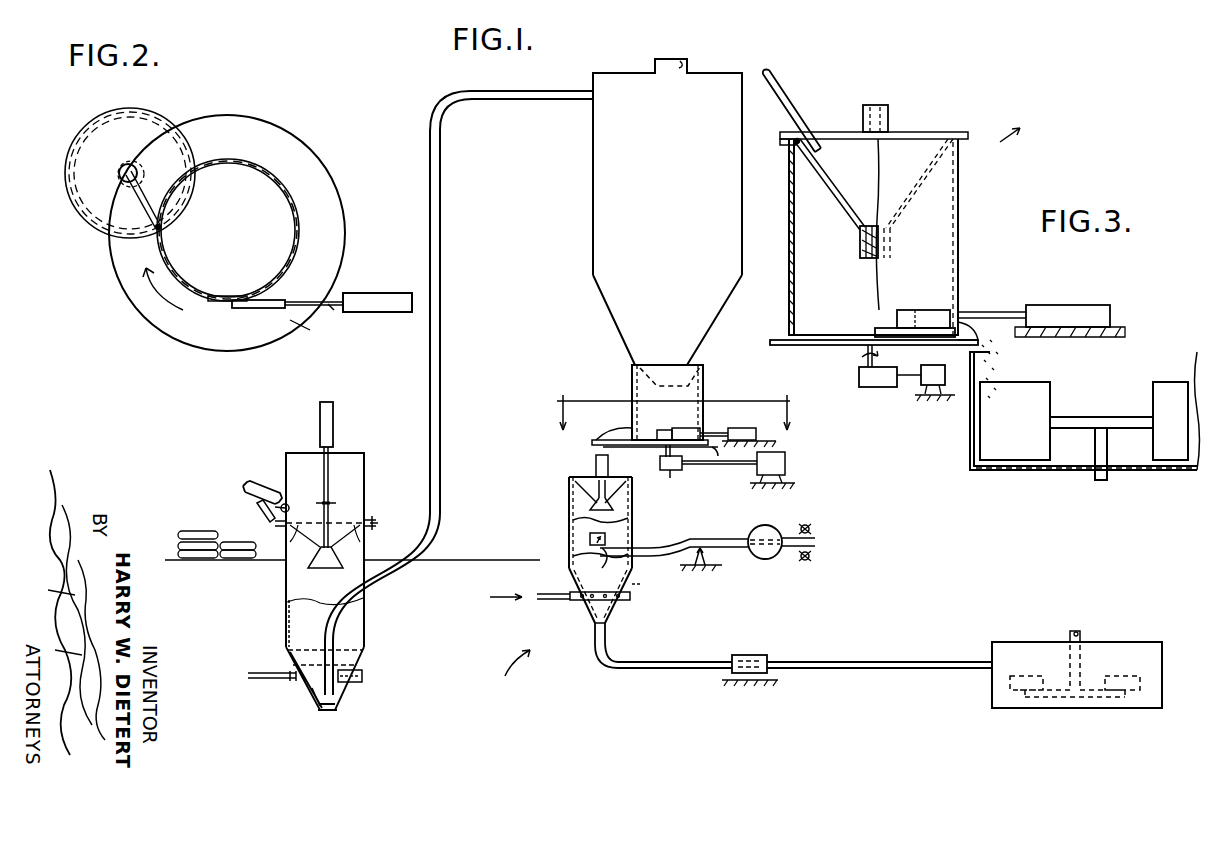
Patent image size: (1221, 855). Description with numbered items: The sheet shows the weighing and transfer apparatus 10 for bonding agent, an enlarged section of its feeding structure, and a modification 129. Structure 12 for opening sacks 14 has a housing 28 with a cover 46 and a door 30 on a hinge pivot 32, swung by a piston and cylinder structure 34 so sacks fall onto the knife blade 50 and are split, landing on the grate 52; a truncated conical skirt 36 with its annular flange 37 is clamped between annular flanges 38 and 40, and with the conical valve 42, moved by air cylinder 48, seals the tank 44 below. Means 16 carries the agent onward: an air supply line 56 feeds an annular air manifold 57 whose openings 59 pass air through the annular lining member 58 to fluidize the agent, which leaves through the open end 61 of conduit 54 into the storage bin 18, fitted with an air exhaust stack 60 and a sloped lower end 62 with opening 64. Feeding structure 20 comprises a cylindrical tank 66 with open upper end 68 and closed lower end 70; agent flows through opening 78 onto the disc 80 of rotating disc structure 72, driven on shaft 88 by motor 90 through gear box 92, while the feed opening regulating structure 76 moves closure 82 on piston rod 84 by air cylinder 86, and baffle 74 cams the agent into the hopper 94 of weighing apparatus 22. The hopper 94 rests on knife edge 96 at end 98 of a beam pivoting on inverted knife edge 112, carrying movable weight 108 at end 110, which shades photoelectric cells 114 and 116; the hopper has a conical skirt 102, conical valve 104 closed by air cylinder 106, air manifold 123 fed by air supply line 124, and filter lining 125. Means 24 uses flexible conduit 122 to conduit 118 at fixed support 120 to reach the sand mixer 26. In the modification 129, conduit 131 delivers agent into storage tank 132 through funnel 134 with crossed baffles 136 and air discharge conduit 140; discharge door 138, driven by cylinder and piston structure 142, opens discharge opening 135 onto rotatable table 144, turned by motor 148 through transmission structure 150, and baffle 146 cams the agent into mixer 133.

In FIG. 1, the weighing and transfer apparatus 10 is at (501, 673).
In FIG. 1, the structure for opening sacks 12 is at (372, 461).
In FIG. 1, the sacks 14 is at (193, 566).
In FIG. 1, the means for transferring bonding agent 16 is at (378, 629).
In FIG. 1, the storage bin 18 is at (742, 190).
In FIG. 2, the structure for feeding bonding agent 20 is at (138, 312).
In FIG. 1, the structure for feeding bonding agent 20 is at (630, 395).
In FIG. 1, the weighing apparatus 22 is at (578, 618).
In FIG. 1, the means for transferring bonding agent 24 is at (670, 668).
In FIG. 1, the sand mixer 26 is at (985, 692).
In FIG. 1, the housing 28 is at (366, 492).
In FIG. 1, the door 30 is at (240, 489).
In FIG. 1, the hinge pivot 32 is at (287, 504).
In FIG. 1, the piston and cylinder structure 34 is at (258, 508).
In FIG. 1, the truncated conical skirt 36 is at (352, 540).
In FIG. 1, the annular flange 37 is at (375, 524).
In FIG. 1, the annular flange 38 is at (366, 516).
In FIG. 1, the annular flange 40 is at (282, 524).
In FIG. 1, the conical valve 42 is at (326, 569).
In FIG. 1, the tank 44 is at (287, 610).
In FIG. 1, the cover 46 is at (296, 455).
In FIG. 1, the air cylinder 48 is at (334, 422).
In FIG. 1, the knife blade 50 is at (338, 500).
In FIG. 1, the grate 52 is at (304, 540).
In FIG. 1, the conduit 54 is at (441, 338).
In FIG. 1, the air supply line 56 is at (262, 670).
In FIG. 1, the annular air manifold 57 is at (362, 672).
In FIG. 1, the annular lining member 58 is at (290, 660).
In FIG. 1, the openings 59 is at (313, 683).
In FIG. 1, the air exhaust stack 60 is at (680, 60).
In FIG. 1, the open end 61 is at (322, 710).
In FIG. 1, the lower end 62 is at (603, 302).
In FIG. 1, the opening 64 is at (703, 395).
In FIG. 2, the cylindrical tank 66 is at (290, 180).
In FIG. 1, the cylindrical tank 66 is at (703, 375).
In FIG. 1, the open upper end 68 is at (630, 362).
In FIG. 1, the closed lower end 70 is at (655, 455).
In FIG. 1, the rotating disc structure 72 is at (700, 466).
In FIG. 2, the baffle 74 is at (128, 190).
In FIG. 1, the baffle 74 is at (615, 432).
In FIG. 2, the feed opening regulating structure 76 is at (334, 310).
In FIG. 1, the feed opening regulating structure 76 is at (718, 452).
In FIG. 2, the opening 78 is at (212, 301).
In FIG. 1, the opening 78 is at (665, 431).
In FIG. 2, the disc 80 is at (309, 333).
In FIG. 1, the disc 80 is at (596, 441).
In FIG. 2, the closure 82 is at (254, 308).
In FIG. 1, the closure 82 is at (678, 428).
In FIG. 2, the piston rod 84 is at (305, 296).
In FIG. 1, the piston rod 84 is at (712, 428).
In FIG. 2, the air cylinder 86 is at (378, 292).
In FIG. 1, the air cylinder 86 is at (745, 427).
In FIG. 1, the shaft 88 is at (640, 483).
In FIG. 1, the motor 90 is at (786, 462).
In FIG. 1, the gear box 92 is at (670, 476).
In FIG. 2, the hopper 94 is at (92, 232).
In FIG. 1, the hopper 94 is at (573, 527).
In FIG. 1, the knife edge 96 is at (590, 546).
In FIG. 1, the end 98 is at (600, 570).
In FIG. 1, the conical skirt 102 is at (569, 490).
In FIG. 1, the conical valve 104 is at (628, 522).
In FIG. 2, the air cylinder 106 is at (126, 166).
In FIG. 1, the air cylinder 106 is at (596, 462).
In FIG. 1, the movable weight 108 is at (756, 558).
In FIG. 1, the end 110 is at (782, 525).
In FIG. 1, the inverted knife edge 112 is at (703, 568).
In FIG. 1, the photoelectric cell 114 is at (804, 562).
In FIG. 1, the photoelectric cell 116 is at (809, 526).
In FIG. 1, the conduit 118 is at (880, 668).
In FIG. 1, the fixed support 120 is at (755, 655).
In FIG. 1, the flexible conduit 122 is at (597, 655).
In FIG. 1, the air manifold 123 is at (630, 600).
In FIG. 1, the air supply line 124 is at (548, 592).
In FIG. 1, the filter lining 125 is at (654, 583).
In FIG. 3, the modification 129 is at (1030, 126).
In FIG. 3, the conduit 131 is at (788, 96).
In FIG. 3, the storage tank 132 is at (975, 245).
In FIG. 3, the mixer 133 is at (992, 475).
In FIG. 3, the funnel 134 is at (846, 208).
In FIG. 3, the discharge opening 135 is at (882, 312).
In FIG. 3, the crossed baffles 136 is at (860, 242).
In FIG. 3, the discharge door 138 is at (932, 308).
In FIG. 3, the air discharge conduit 140 is at (885, 118).
In FIG. 3, the cylinder and piston structure 142 is at (1066, 305).
In FIG. 3, the rotatable table 144 is at (830, 345).
In FIG. 3, the baffle 146 is at (962, 315).
In FIG. 3, the motor 148 is at (912, 390).
In FIG. 3, the transmission structure 150 is at (873, 387).